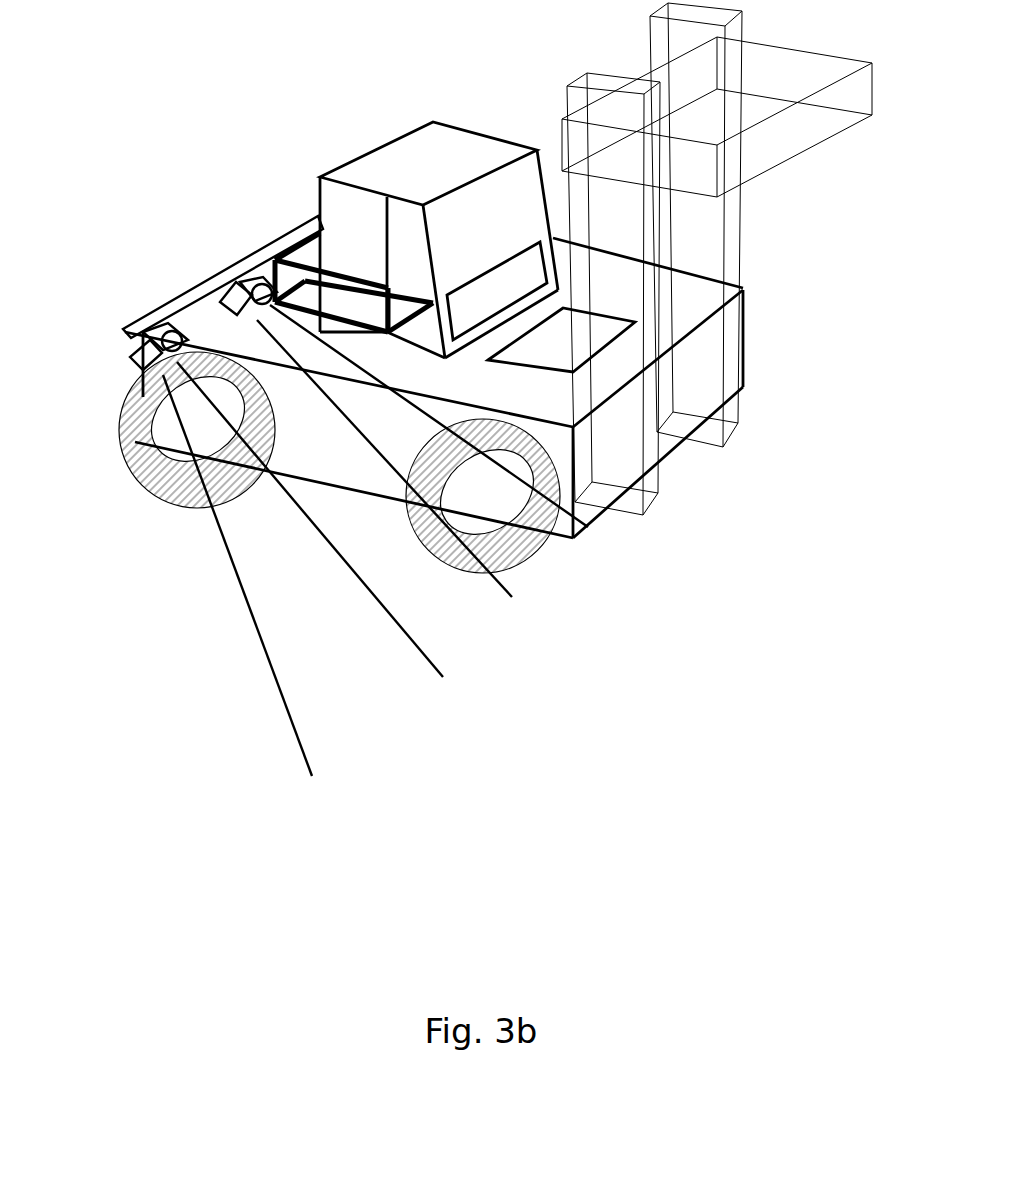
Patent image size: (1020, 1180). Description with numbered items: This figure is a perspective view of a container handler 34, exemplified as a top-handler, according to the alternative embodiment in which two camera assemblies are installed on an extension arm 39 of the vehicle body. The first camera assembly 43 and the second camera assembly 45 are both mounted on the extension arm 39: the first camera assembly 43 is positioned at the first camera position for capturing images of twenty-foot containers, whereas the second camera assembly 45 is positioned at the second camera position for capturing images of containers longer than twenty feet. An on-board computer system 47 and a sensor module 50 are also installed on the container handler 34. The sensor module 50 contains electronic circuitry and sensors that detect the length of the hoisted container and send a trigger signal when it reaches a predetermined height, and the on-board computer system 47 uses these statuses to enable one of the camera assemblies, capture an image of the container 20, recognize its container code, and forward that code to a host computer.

The container 20 is at (807, 162).
The container handler 34 is at (614, 530).
The extension arm 39 is at (198, 300).
The first camera assembly 43 is at (243, 283).
The second camera assembly 45 is at (146, 335).
The on-board computer system 47 is at (512, 256).
The sensor module 50 is at (507, 360).